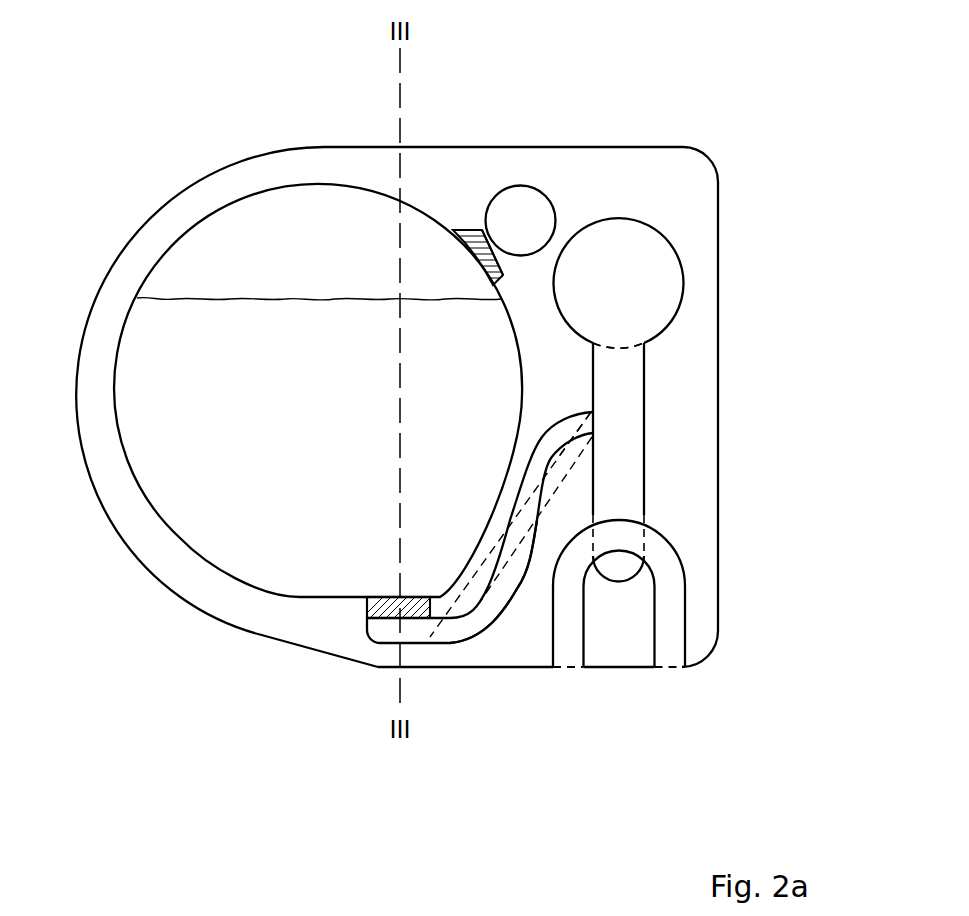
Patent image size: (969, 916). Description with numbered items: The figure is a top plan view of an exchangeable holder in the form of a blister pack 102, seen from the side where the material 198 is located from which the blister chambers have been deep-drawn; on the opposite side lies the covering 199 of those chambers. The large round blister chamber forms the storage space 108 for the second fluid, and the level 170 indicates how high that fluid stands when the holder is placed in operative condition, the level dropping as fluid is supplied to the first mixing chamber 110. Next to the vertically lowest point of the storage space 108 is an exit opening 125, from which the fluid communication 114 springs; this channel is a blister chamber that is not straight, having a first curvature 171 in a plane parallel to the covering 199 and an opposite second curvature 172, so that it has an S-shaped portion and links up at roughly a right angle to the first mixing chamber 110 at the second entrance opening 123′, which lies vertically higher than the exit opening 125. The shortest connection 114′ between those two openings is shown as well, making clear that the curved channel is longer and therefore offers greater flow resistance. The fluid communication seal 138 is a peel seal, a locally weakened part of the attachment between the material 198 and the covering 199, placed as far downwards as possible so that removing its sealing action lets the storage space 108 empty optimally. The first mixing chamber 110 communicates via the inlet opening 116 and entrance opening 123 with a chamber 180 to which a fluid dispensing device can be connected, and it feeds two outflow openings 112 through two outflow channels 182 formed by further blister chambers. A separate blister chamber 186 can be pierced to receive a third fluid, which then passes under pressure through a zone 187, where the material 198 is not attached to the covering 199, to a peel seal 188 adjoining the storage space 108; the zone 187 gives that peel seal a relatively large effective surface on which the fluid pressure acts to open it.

The blister pack 102 is at (190, 685).
The storage space 108 is at (153, 440).
The first mixing chamber 110 is at (628, 498).
The outflow opening 112 is at (668, 670).
The fluid communication 114 is at (503, 590).
The shortest connection 114′ is at (532, 490).
The inlet opening 116 is at (620, 346).
The entrance opening 123 is at (618, 345).
The second entrance opening 123′ is at (593, 423).
The exit opening 125 is at (415, 595).
The fluid communication seal 138 is at (378, 605).
The level 170 is at (290, 292).
The first curvature 171 is at (477, 651).
The second curvature 172 is at (537, 422).
The chamber 180 is at (637, 256).
The outflow channel 182 is at (568, 638).
The blister chamber 186 is at (511, 205).
The zone 187 is at (475, 233).
The peel seal 188 is at (460, 237).
The material 198 is at (684, 475).
The covering 199 is at (684, 444).